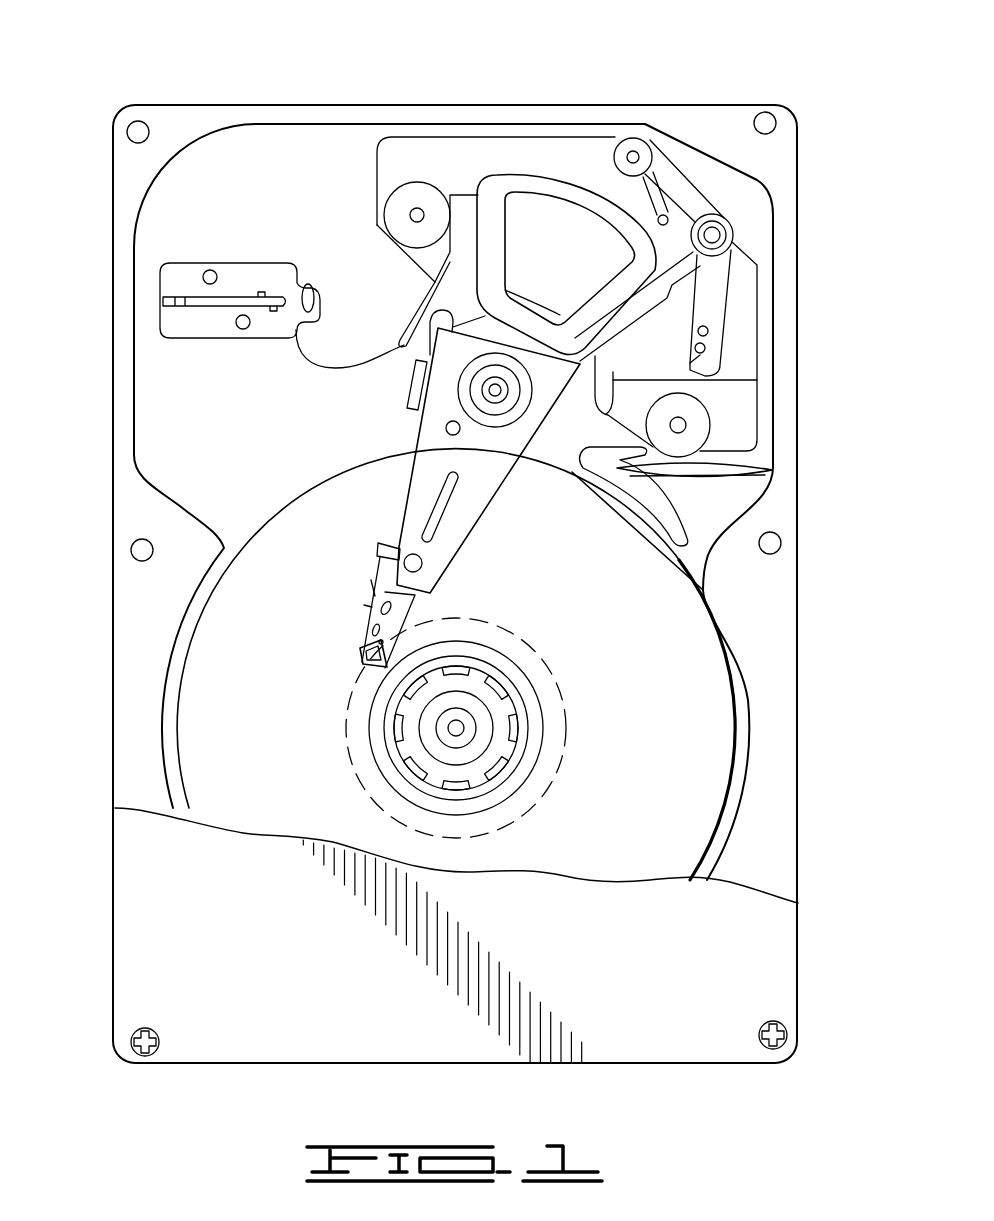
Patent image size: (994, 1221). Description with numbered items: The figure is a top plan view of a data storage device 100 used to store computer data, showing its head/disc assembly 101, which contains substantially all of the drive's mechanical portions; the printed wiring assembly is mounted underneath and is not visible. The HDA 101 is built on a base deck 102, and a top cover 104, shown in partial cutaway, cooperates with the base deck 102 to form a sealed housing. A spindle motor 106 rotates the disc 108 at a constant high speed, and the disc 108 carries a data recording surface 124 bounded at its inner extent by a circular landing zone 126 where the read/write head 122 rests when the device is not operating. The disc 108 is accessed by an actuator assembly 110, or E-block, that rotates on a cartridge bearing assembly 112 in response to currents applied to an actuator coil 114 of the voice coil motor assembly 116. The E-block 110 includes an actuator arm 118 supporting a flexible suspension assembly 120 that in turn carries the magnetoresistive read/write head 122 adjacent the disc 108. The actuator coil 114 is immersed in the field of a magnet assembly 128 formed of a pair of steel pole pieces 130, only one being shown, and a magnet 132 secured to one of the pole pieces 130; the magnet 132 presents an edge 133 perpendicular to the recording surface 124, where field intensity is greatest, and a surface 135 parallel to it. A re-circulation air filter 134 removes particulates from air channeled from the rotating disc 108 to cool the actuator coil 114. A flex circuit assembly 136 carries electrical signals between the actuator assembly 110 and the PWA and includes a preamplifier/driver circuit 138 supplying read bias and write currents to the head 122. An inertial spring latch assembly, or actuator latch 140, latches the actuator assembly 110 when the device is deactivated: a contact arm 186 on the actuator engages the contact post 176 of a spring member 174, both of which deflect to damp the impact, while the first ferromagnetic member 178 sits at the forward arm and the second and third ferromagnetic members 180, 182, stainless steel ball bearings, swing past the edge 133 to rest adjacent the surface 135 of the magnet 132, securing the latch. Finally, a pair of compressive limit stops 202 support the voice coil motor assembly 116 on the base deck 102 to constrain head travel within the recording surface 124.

The data storage device 100 is at (210, 65).
The head/disc assembly 101 is at (165, 125).
The base deck 102 is at (165, 415).
The top cover 104 is at (166, 880).
The spindle motor 106 is at (490, 722).
The disc 108 is at (713, 733).
The actuator assembly 110 is at (462, 465).
The cartridge bearing assembly 112 is at (495, 397).
The actuator coil 114 is at (520, 175).
The voice coil motor assembly 116 is at (548, 121).
The actuator arm 118 is at (423, 581).
The flexible suspension assembly 120 is at (355, 601).
The read/write head 122 is at (362, 650).
The data recording surface 124 is at (617, 807).
The landing zone 126 is at (527, 653).
The magnet assembly 128 is at (738, 420).
The pole piece 130 is at (747, 350).
The magnet 132 is at (732, 370).
The edge of the magnet 133 is at (610, 412).
The re-circulation air filter 134 is at (697, 477).
The surface of the magnet 135 is at (677, 370).
The flex circuit assembly 136 is at (343, 365).
The preamplifier/driver circuit 138 is at (413, 383).
The actuator latch 140 is at (735, 209).
The spring member 174 is at (660, 198).
The contact post 176 is at (657, 226).
The first ferromagnetic member 178 is at (641, 150).
The second ferromagnetic member 180 is at (708, 330).
The third ferromagnetic member 182 is at (692, 360).
The contact arm 186 is at (678, 282).
The compressive limit stop 202 is at (400, 207).